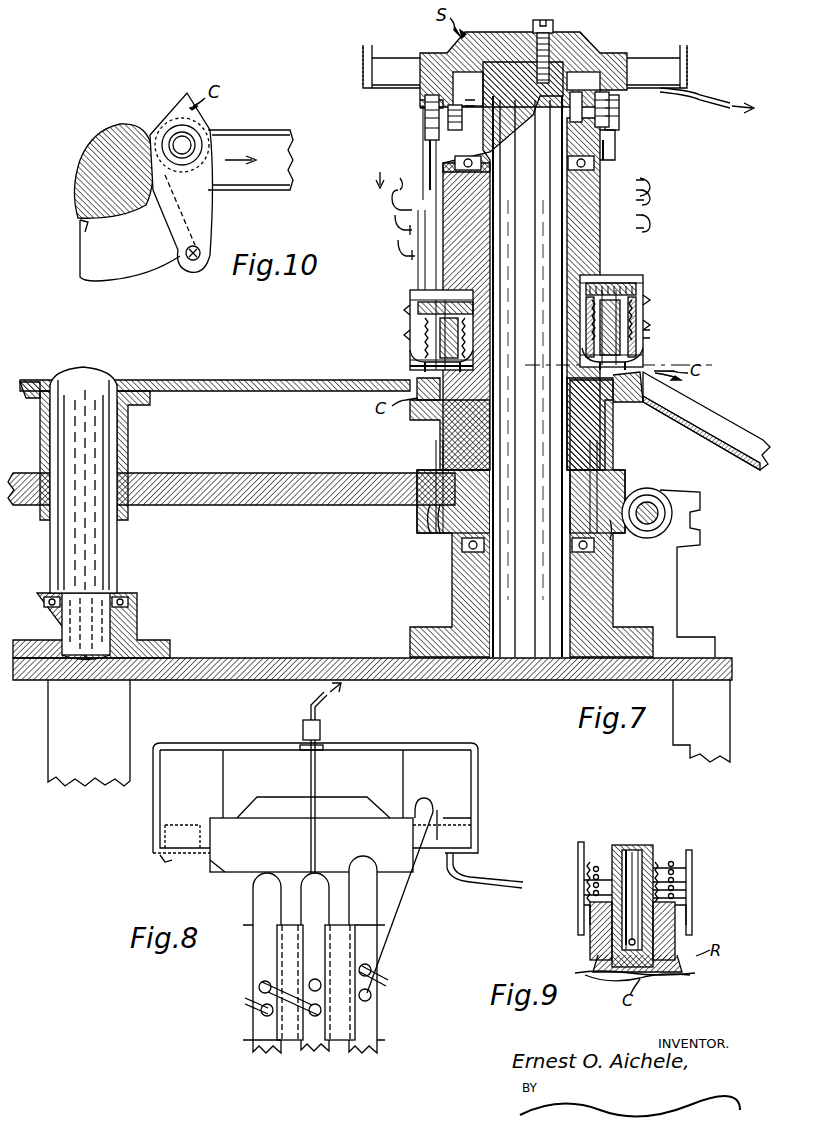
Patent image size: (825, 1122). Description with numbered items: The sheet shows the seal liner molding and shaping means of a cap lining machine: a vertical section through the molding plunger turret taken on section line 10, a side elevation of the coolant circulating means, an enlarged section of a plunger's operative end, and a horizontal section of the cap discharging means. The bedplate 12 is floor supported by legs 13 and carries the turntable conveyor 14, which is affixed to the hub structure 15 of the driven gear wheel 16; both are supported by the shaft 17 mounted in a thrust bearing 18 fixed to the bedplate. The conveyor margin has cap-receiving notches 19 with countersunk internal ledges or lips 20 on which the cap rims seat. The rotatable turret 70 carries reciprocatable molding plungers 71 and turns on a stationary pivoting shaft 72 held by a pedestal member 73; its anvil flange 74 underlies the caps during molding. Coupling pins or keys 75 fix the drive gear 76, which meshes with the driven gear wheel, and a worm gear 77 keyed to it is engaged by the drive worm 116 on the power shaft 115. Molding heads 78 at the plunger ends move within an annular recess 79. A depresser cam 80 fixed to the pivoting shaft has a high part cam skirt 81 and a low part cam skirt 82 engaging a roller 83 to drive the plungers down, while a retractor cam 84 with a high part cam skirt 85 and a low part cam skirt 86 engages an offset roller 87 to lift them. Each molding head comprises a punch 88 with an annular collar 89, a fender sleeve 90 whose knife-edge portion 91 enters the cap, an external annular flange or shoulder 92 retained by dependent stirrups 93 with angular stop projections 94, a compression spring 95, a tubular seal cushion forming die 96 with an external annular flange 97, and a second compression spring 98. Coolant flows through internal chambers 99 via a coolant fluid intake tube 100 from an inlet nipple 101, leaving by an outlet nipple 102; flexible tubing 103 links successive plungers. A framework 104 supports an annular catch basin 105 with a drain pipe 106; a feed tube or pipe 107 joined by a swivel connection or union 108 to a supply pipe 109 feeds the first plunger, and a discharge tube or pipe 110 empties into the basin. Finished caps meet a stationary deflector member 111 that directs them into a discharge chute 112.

In FIG. 7, the section line 10 is at (527, 368).
In FIG. 7, the bedplate 12 is at (244, 657).
In FIG. 7, the legs 13 is at (130, 724).
In FIG. 7, the turntable conveyor 14 is at (264, 378).
In FIG. 7, the hub structure 15 is at (128, 439).
In FIG. 7, the driven gear wheel 16 is at (278, 473).
In FIG. 7, the shaft 17 is at (118, 550).
In FIG. 7, the thrust bearing 18 is at (130, 622).
In FIG. 7, the cap-receiving notches 19 is at (410, 362).
In FIG. 7, the countersunk internal ledges or lips 20 is at (418, 384).
In FIG. 7, the rotatable turret 70 is at (609, 180).
In FIG. 10, the rotatable turret 70 is at (80, 222).
In FIG. 7, the molding plungers 71 is at (426, 128).
In FIG. 8, the molding plungers 71 is at (254, 908).
In FIG. 7, the pivoting shaft 72 is at (605, 440).
In FIG. 10, the pivoting shaft 72 is at (95, 149).
In FIG. 7, the pedestal member 73 is at (452, 592).
In FIG. 7, the anvil flange 74 is at (420, 408).
In FIG. 9, the anvil flange 74 is at (688, 974).
In FIG. 10, the anvil flange 74 is at (136, 266).
In FIG. 7, the coupling pins or keys 75 is at (444, 452).
In FIG. 7, the drive gear 76 is at (430, 532).
In FIG. 7, the worm gear 77 is at (444, 547).
In FIG. 7, the molding heads 78 is at (400, 298).
In FIG. 7, the annular recess 79 is at (614, 408).
In FIG. 7, the depresser cam 80 is at (480, 34).
In FIG. 8, the depresser cam 80 is at (340, 810).
In FIG. 7, the high part cam skirt 81 is at (414, 108).
In FIG. 8, the high part cam skirt 81 is at (221, 875).
In FIG. 7, the low part cam skirt 82 is at (629, 94).
In FIG. 8, the low part cam skirt 82 is at (412, 866).
In FIG. 7, the roller 83 is at (622, 62).
In FIG. 8, the roller 83 is at (254, 885).
In FIG. 7, the retractor cam 84 is at (616, 150).
In FIG. 7, the high part cam skirt 85 is at (620, 134).
In FIG. 7, the low part cam skirt 86 is at (424, 152).
In FIG. 7, the offset roller 87 is at (592, 56).
In FIG. 7, the punch 88 is at (619, 322).
In FIG. 9, the punch 88 is at (617, 847).
In FIG. 7, the annular collar 89 is at (426, 292).
In FIG. 7, the fender sleeve 90 is at (410, 347).
In FIG. 9, the fender sleeve 90 is at (686, 948).
In FIG. 9, the knife-edge portion 91 is at (606, 984).
In FIG. 9, the external annular flange or shoulder 92 is at (586, 912).
In FIG. 7, the dependent stirrups 93 is at (410, 310).
In FIG. 9, the dependent stirrups 93 is at (587, 891).
In FIG. 7, the angular stop projections 94 is at (649, 334).
In FIG. 9, the angular stop projections 94 is at (577, 930).
In FIG. 7, the compression spring 95 is at (406, 318).
In FIG. 9, the compression spring 95 is at (693, 870).
In FIG. 7, the seal cushion forming die 96 is at (420, 354).
In FIG. 9, the external annular flange 97 is at (683, 895).
In FIG. 7, the second compression spring 98 is at (641, 298).
In FIG. 9, the second compression spring 98 is at (676, 853).
In FIG. 7, the internal chambers 99 is at (424, 168).
In FIG. 9, the internal chambers 99 is at (628, 842).
In FIG. 7, the coolant fluid intake tube 100 is at (419, 264).
In FIG. 9, the coolant fluid intake tube 100 is at (644, 851).
In FIG. 7, the inlet nipple 101 is at (407, 236).
In FIG. 8, the inlet nipple 101 is at (394, 954).
In FIG. 7, the outlet nipple 102 is at (407, 255).
In FIG. 8, the outlet nipple 102 is at (256, 1022).
In FIG. 7, the flexible tubing 103 is at (402, 228).
In FIG. 8, the flexible tubing 103 is at (245, 1000).
In FIG. 8, the framework 104 is at (395, 738).
In FIG. 7, the annular catch basin 105 is at (366, 88).
In FIG. 8, the annular catch basin 105 is at (162, 860).
In FIG. 7, the drain pipe 106 is at (716, 96).
In FIG. 8, the drain pipe 106 is at (482, 886).
In FIG. 7, the feed tube or pipe 107 is at (382, 184).
In FIG. 8, the feed tube or pipe 107 is at (316, 834).
In FIG. 8, the swivel connection or union 108 is at (322, 728).
In FIG. 8, the supply pipe 109 is at (309, 707).
In FIG. 8, the discharge tube or pipe 110 is at (396, 912).
In FIG. 10, the stationary deflector member 111 is at (194, 206).
In FIG. 7, the discharge chute 112 is at (729, 458).
In FIG. 10, the discharge chute 112 is at (268, 122).
In FIG. 7, the power shaft 115 is at (654, 494).
In FIG. 7, the drive worm 116 is at (677, 542).